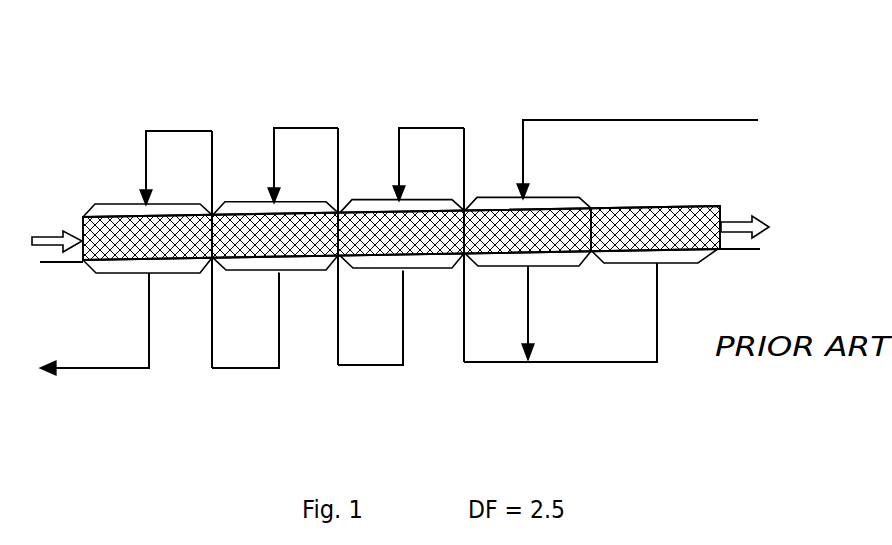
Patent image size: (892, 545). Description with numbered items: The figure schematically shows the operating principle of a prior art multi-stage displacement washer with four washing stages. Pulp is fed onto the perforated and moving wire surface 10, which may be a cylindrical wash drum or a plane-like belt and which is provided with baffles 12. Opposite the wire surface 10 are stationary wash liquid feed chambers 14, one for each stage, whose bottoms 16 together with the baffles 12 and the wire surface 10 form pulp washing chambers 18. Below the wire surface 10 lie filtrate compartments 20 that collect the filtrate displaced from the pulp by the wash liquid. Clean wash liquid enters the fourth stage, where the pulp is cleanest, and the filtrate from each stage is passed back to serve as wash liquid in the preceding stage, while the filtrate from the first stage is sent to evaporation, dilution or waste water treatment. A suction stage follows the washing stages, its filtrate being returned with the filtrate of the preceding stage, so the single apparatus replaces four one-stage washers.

The wire surface 10 is at (70, 262).
The baffles 12 is at (240, 213).
The wash liquid feed chambers 14 is at (145, 213).
The bottoms 16 is at (125, 216).
The pulp washing chambers 18 is at (98, 216).
The filtrate compartments 20 is at (168, 263).